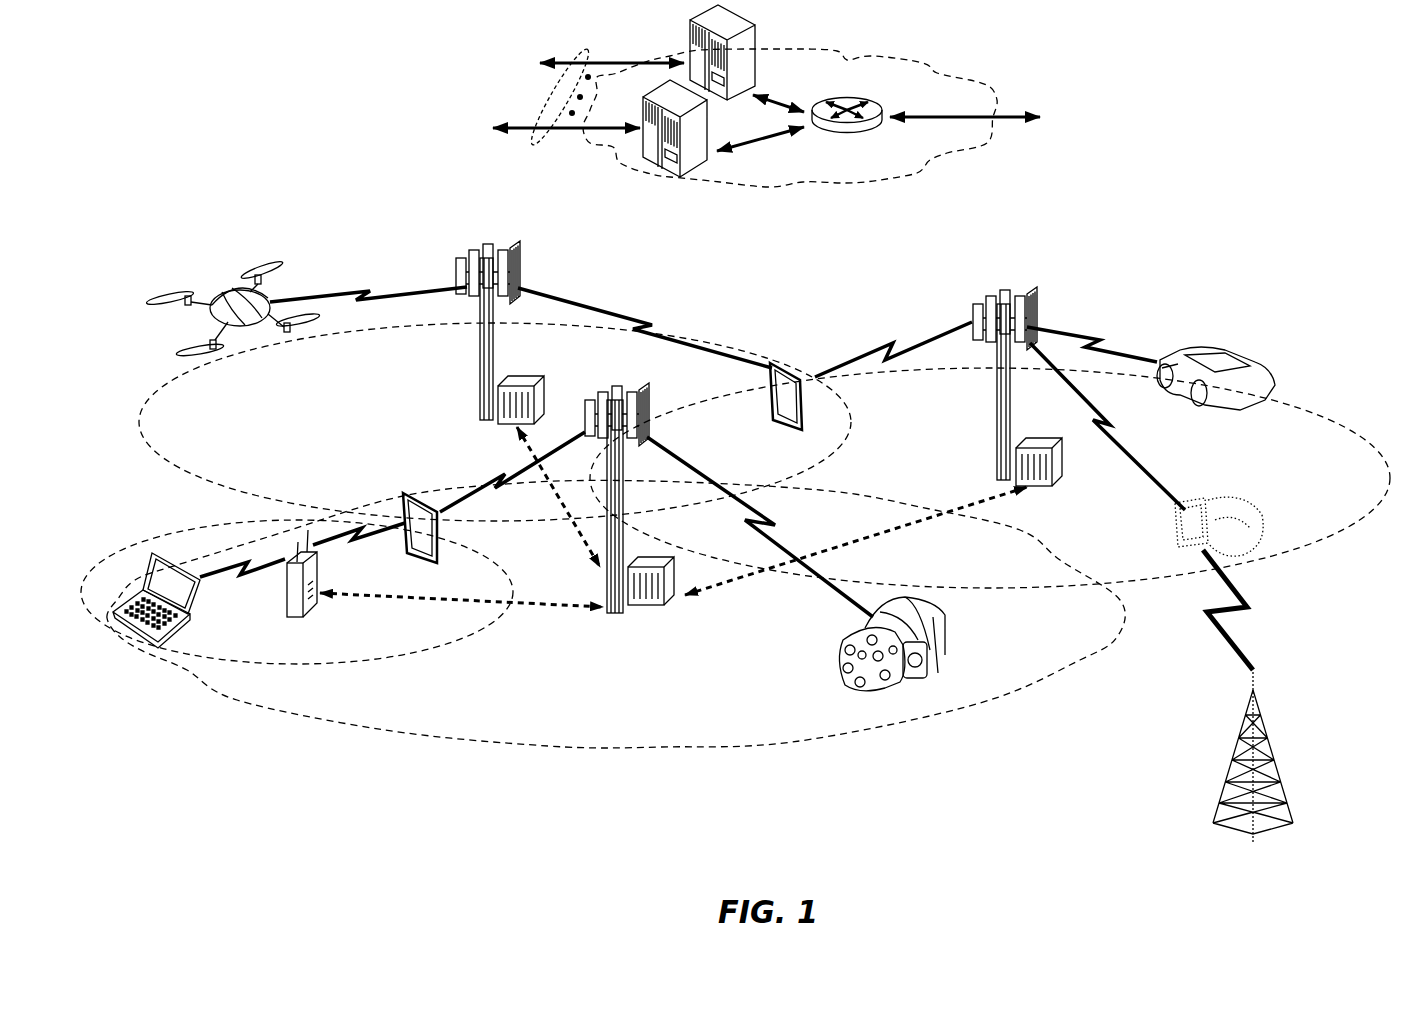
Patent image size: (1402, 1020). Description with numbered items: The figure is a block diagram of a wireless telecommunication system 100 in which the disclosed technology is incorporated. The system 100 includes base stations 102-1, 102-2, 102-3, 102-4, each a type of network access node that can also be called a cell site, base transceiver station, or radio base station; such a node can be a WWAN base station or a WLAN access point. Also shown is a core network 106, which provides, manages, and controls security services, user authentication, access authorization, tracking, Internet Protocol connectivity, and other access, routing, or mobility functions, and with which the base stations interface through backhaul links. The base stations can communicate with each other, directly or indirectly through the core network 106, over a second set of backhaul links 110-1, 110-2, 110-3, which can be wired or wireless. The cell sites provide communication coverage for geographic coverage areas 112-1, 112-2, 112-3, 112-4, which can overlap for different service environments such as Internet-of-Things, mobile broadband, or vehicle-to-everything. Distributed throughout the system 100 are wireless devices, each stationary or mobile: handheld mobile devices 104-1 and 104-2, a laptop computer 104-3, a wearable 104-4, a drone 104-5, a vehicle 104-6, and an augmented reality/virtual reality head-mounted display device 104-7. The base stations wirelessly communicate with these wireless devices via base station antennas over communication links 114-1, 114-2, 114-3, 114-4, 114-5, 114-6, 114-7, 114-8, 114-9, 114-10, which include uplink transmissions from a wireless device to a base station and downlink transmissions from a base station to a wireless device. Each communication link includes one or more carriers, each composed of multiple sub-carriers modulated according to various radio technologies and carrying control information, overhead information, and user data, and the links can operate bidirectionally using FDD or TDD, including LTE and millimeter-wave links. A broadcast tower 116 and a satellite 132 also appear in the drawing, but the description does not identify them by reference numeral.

The wireless telecommunication system 100 is at (1288, 107).
The base station 102-1 is at (613, 617).
The base station 102-2 is at (478, 372).
The base station 102-3 is at (997, 410).
The base station 102-4 is at (285, 593).
The wireless device 104-1 is at (440, 542).
The wireless device 104-2 is at (770, 410).
The wireless device 104-3 is at (130, 640).
The wireless device 104-4 is at (1193, 503).
The wireless device 104-5 is at (258, 340).
The wireless device 104-6 is at (1240, 357).
The wireless device 104-7 is at (945, 628).
The core network 106 is at (877, 182).
The backhaul link 110-1 is at (357, 602).
The backhaul link 110-2 is at (920, 527).
The backhaul link 110-3 is at (577, 520).
The geographic coverage area 112-1 is at (545, 746).
The geographic coverage area 112-2 is at (420, 657).
The geographic coverage area 112-3 is at (200, 472).
The geographic coverage area 112-4 is at (1293, 401).
The communication link 114-1 is at (777, 530).
The communication link 114-2 is at (500, 475).
The communication link 114-3 is at (217, 574).
The communication link 114-4 is at (358, 538).
The communication link 114-5 is at (363, 291).
The communication link 114-6 is at (650, 322).
The communication link 114-7 is at (893, 341).
The communication link 114-8 is at (1123, 441).
The communication link 114-9 is at (1095, 333).
The communication link 114-10 is at (1238, 613).
The broadcast tower 116 is at (1267, 737).
The satellite 132 is at (548, 144).